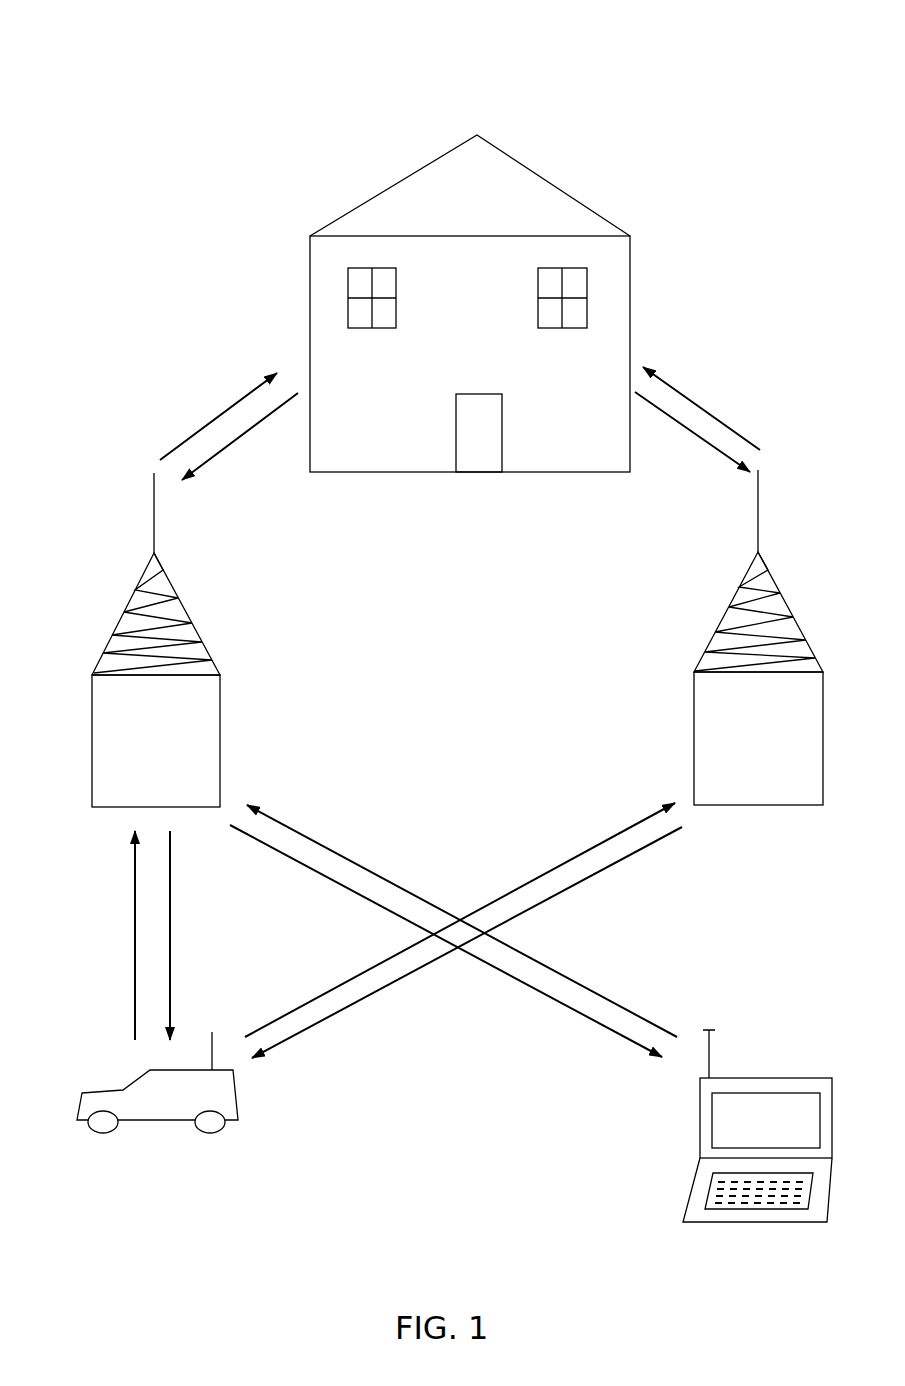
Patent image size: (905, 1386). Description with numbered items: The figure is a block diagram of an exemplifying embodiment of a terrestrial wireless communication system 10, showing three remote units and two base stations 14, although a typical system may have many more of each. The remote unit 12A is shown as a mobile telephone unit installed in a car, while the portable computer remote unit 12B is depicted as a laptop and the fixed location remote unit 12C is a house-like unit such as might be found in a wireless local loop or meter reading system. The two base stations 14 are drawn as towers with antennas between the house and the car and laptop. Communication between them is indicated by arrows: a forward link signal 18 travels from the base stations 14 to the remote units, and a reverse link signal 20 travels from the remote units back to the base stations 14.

The terrestrial wireless communication system 10 is at (670, 49).
The remote unit 12A is at (100, 1092).
The portable computer remote unit 12B is at (808, 1078).
The fixed location remote unit 12C is at (550, 182).
The base station 14 is at (125, 612).
The forward link signal 18 is at (233, 402).
The reverse link signal 20 is at (253, 428).